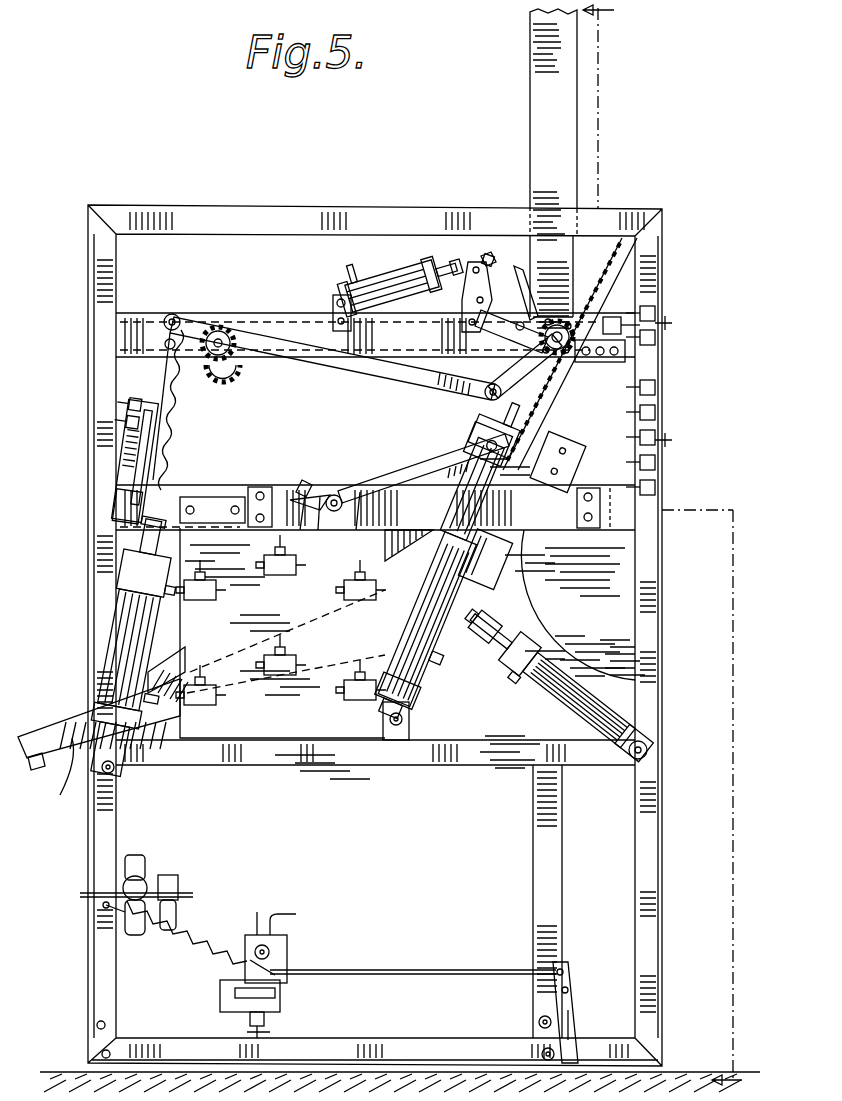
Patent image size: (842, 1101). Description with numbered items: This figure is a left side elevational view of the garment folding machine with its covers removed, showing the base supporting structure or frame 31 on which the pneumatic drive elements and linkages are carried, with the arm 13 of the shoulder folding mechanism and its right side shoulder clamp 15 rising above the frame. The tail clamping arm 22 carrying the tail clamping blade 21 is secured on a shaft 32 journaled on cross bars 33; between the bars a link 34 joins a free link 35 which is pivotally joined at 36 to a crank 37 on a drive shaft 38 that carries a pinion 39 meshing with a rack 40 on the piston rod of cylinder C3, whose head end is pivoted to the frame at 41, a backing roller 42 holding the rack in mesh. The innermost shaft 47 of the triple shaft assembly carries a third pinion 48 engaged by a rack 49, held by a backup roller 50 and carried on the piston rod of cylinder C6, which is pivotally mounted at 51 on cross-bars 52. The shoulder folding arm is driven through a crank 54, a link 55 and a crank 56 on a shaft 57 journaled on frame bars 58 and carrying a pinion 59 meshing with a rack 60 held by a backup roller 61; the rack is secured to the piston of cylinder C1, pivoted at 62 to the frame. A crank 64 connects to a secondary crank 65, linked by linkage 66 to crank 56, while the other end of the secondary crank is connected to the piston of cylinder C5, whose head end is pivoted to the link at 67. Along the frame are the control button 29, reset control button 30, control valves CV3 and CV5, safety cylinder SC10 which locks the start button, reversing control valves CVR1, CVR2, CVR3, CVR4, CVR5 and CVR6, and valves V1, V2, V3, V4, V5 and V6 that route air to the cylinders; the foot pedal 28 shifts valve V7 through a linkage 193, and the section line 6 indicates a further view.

The section line 6- 6 is at (671, 550).
The arm 13 is at (530, 80).
The right side shoulder clamp 15 is at (487, 254).
The tail clamping blade 21 is at (56, 777).
The tail clamping arm 22 is at (65, 720).
The foot pedal 28 is at (585, 1040).
The control button 29 is at (672, 326).
The reset control button 30 is at (672, 444).
The frame 31 is at (652, 246).
The shaft 32 is at (380, 480).
The cross bars 33 is at (200, 486).
The link 34 is at (460, 440).
The free link 35 is at (366, 480).
The pivot 36 is at (357, 488).
The crank 37 is at (322, 490).
The drive shaft 38 is at (300, 490).
The pinion 39 is at (290, 496).
The rack 40 is at (425, 562).
The pivot 41 is at (648, 748).
The backing roller 42 is at (338, 478).
The innermost shaft 47 is at (500, 402).
The third pinion 48 is at (558, 320).
The rack 49 is at (610, 290).
The backup roller 50 is at (590, 364).
The pivot 51 is at (410, 722).
The cross-bars 52 is at (403, 770).
The crank 54 is at (490, 352).
The link 55 is at (400, 382).
The crank 56 is at (195, 360).
The shaft 57 is at (222, 330).
The frame bars 58 is at (168, 314).
The pinion 59 is at (236, 368).
The rack 60 is at (179, 410).
The backup roller 61 is at (160, 345).
The pivot 62 is at (120, 772).
The crank 64 is at (492, 283).
The secondary crank 65 is at (465, 300).
The linkage 66 is at (368, 345).
The pivot 67 is at (333, 300).
The rod 193 is at (420, 975).
The cylinder C1 is at (118, 636).
The cylinder C3 is at (533, 686).
The cylinder C5 is at (380, 300).
The cylinder C6 is at (432, 640).
The control valve CV3 is at (655, 310).
The control valve CV5 is at (652, 345).
The reversing control valve CVR1 is at (220, 1008).
The reverse control valve CVR2 is at (655, 440).
The reversing control valve CVR3 is at (652, 490).
The reverse control valve CVR4 is at (655, 464).
The reversing control valve CVR5 is at (655, 388).
The reversing control valve CVR6 is at (655, 414).
The safety cylinder SC10 is at (625, 322).
The valve V1 is at (281, 655).
The valve V2 is at (201, 685).
The four-way valve V3 is at (361, 680).
The valve V4 is at (201, 580).
The four-way valve V5 is at (281, 555).
The control valve V6 is at (361, 580).
The valve V7 is at (290, 960).